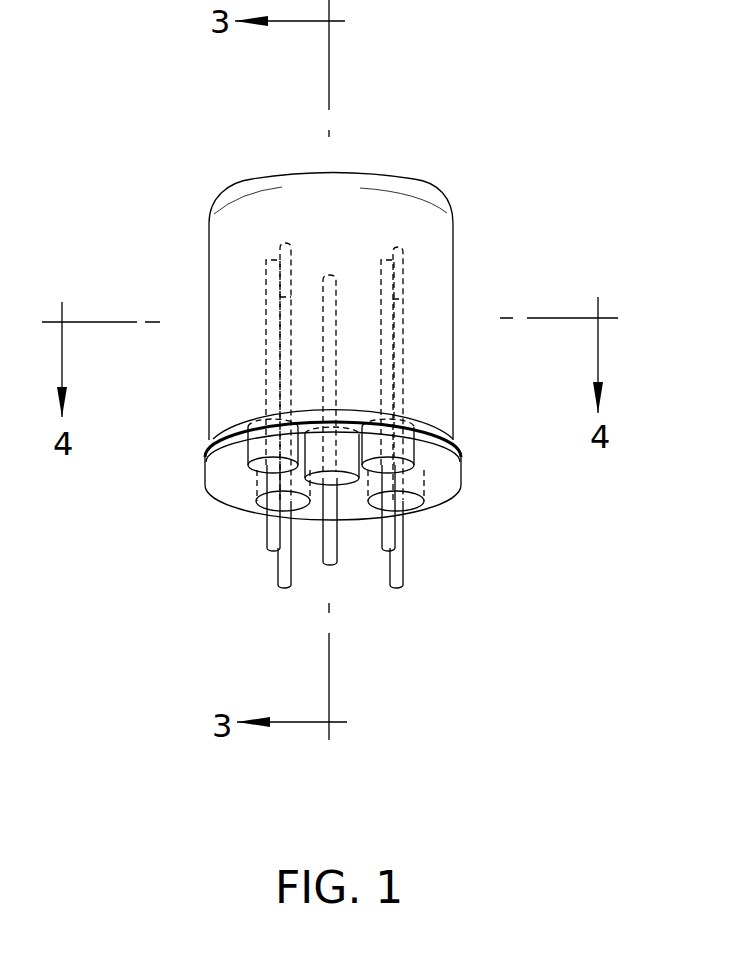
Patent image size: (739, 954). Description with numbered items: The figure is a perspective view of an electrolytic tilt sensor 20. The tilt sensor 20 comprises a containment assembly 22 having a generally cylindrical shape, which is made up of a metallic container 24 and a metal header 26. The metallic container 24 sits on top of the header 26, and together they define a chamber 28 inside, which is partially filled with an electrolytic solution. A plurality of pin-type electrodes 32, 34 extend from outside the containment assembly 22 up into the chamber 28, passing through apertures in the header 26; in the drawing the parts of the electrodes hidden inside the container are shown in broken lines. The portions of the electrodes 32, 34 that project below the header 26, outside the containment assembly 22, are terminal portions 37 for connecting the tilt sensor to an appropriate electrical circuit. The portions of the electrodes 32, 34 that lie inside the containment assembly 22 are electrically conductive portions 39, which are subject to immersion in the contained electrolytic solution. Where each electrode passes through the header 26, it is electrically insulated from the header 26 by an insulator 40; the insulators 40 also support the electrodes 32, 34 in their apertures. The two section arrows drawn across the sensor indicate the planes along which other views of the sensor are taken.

The electrical feedthrough assembly 20 is at (494, 202).
The housing can 22 is at (233, 397).
The cover top 24 is at (347, 216).
The header flange 26 is at (228, 467).
The interior cavity 28 is at (252, 292).
The center terminal pin 32 is at (327, 347).
The outer terminal pin 34 is at (268, 272).
The pin lower end 37 is at (276, 535).
The pin coating 39 is at (358, 365).
The glass insulator seal 40 is at (268, 470).